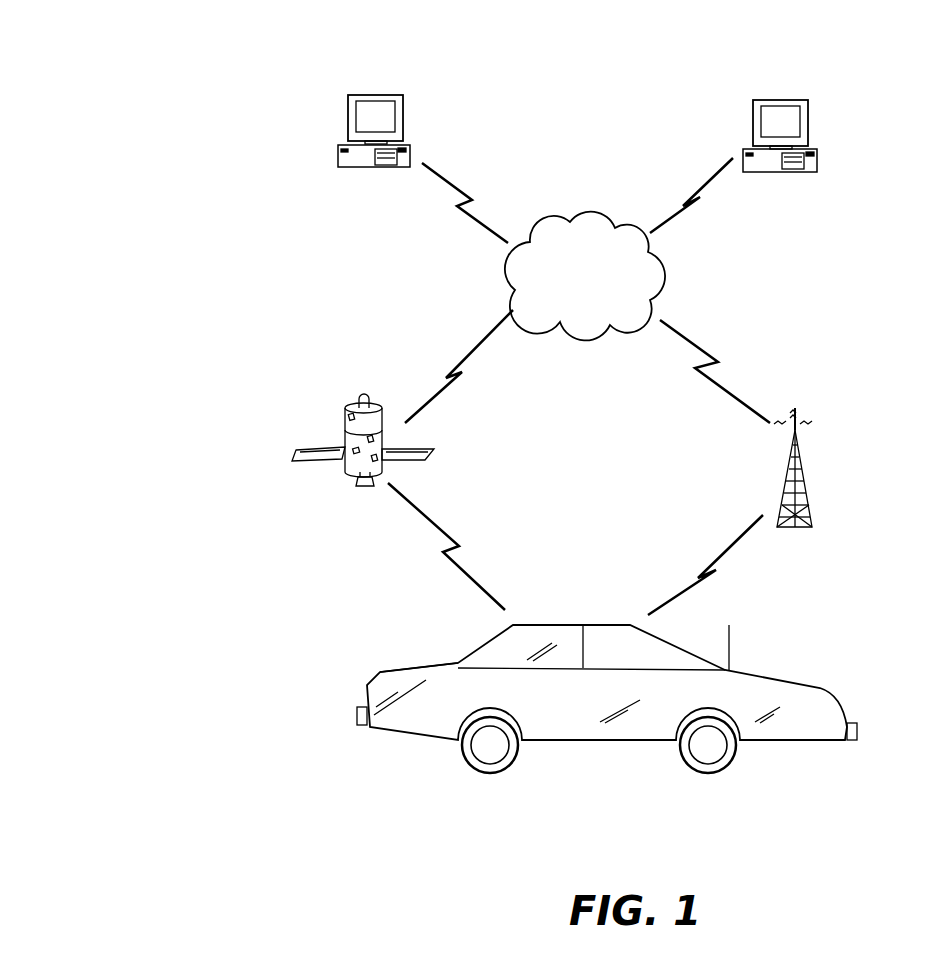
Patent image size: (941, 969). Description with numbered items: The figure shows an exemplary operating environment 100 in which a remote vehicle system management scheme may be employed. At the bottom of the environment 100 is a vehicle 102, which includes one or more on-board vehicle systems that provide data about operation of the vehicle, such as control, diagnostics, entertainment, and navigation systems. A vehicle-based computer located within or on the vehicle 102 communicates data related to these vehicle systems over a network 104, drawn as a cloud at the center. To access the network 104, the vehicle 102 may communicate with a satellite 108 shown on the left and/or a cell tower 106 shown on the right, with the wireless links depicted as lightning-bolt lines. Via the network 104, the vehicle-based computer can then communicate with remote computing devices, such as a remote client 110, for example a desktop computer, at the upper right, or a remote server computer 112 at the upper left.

The operating environment 100 is at (170, 72).
The vehicle 102 is at (348, 636).
The network 104 is at (585, 276).
The cell tower 106 is at (810, 504).
The satellite 108 is at (345, 468).
The remote client 110 is at (818, 163).
The remote server computer 112 is at (340, 148).